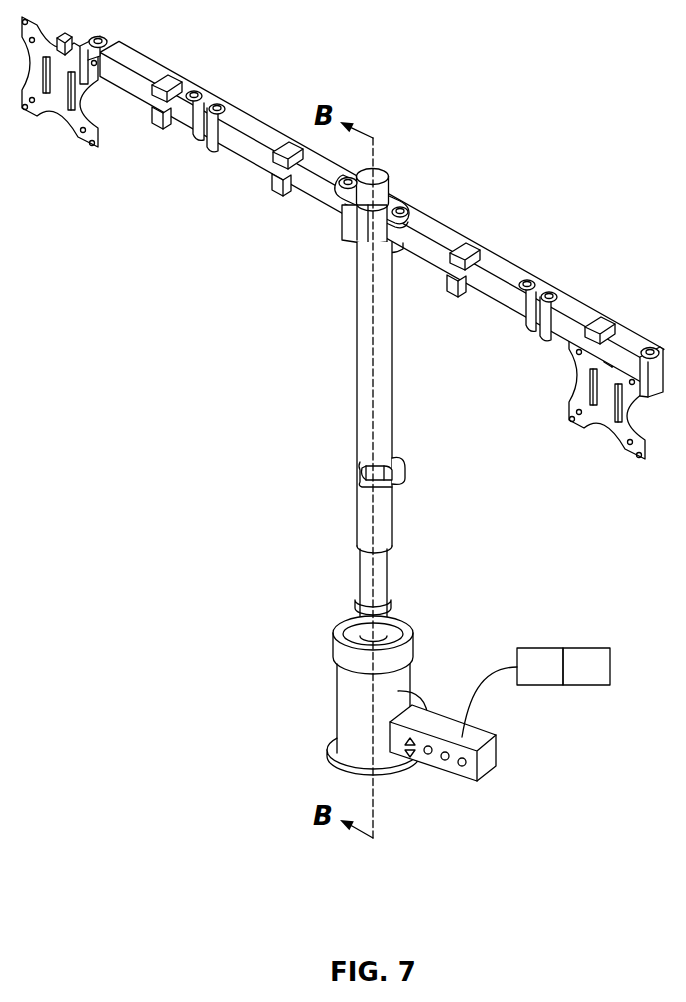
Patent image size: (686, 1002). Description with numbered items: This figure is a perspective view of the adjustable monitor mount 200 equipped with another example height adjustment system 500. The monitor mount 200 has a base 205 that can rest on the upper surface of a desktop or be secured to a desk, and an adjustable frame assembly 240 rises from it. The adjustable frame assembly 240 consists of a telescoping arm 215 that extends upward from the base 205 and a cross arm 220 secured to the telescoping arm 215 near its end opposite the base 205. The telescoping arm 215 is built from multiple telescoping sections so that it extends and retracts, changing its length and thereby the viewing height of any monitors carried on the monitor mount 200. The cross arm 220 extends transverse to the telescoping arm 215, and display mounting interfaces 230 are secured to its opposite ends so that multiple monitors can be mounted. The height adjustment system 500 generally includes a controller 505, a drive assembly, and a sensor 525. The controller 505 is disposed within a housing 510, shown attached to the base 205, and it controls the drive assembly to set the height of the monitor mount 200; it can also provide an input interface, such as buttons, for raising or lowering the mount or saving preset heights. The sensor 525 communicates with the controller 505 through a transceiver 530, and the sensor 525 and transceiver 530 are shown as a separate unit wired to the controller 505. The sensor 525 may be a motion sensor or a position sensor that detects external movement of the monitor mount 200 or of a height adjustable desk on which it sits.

The monitor mount 200 is at (450, 187).
The base 205 is at (348, 705).
The telescoping arm 215 is at (345, 419).
The cross arm 220 is at (506, 255).
The display mounting interfaces 230 is at (57, 117).
The adjustable frame assembly 240 is at (323, 262).
The height adjustment system 500 is at (449, 665).
The controller 505 is at (446, 779).
The housing 510 is at (488, 756).
The sensor 525 is at (585, 658).
The transceiver 530 is at (540, 660).